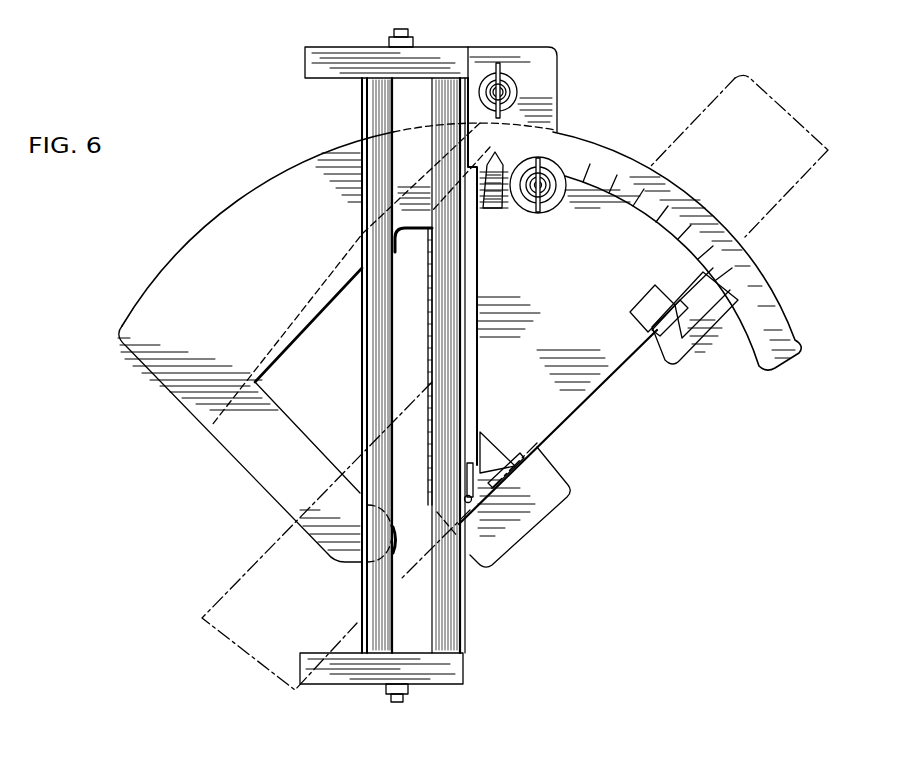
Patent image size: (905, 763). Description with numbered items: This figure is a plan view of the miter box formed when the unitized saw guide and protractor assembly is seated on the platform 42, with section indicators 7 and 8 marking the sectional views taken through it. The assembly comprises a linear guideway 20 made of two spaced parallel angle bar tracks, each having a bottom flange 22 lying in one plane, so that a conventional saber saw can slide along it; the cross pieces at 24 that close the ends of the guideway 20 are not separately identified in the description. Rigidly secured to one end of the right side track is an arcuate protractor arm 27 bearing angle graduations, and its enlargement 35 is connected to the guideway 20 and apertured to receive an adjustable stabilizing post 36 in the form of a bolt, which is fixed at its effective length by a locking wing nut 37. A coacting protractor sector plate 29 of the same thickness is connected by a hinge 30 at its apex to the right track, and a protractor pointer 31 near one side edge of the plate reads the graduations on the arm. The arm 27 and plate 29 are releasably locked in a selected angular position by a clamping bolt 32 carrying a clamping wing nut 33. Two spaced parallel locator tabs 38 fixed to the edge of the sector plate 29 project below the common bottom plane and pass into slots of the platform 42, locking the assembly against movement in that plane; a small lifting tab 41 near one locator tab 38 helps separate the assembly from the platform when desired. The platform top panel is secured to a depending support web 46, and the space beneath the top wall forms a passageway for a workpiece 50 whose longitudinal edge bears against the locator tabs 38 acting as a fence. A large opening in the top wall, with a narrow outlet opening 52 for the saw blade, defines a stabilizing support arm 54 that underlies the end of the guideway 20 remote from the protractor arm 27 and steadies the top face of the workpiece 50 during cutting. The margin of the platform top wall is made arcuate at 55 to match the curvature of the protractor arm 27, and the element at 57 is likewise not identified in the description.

The section line 7- 7 is at (58, 573).
The section line 8- 8 is at (207, 72).
The linear guideway 20 is at (361, 326).
The bottom flange 22 is at (450, 348).
The end plate 24 is at (337, 58).
The arcuate protractor arm 27 is at (717, 235).
The protractor sector plate 29 is at (566, 337).
The hinge 30 is at (477, 505).
The protractor pointer 31 is at (493, 200).
The clamping bolt 32 is at (546, 178).
The clamping wing nut 33 is at (550, 197).
The enlargement 35 is at (527, 60).
The stabilizing post 36 is at (510, 92).
The locking wing nut 37 is at (497, 60).
The locator tabs 38 is at (648, 312).
The lifting tab 41 is at (717, 317).
The platform 42 is at (182, 368).
The support web 46 is at (322, 292).
The workpiece 50 is at (255, 565).
The outlet opening 52 is at (410, 537).
The stabilizing support arm 54 is at (280, 482).
The arcuate margin 55 is at (331, 150).
The notch edge 57 is at (283, 380).